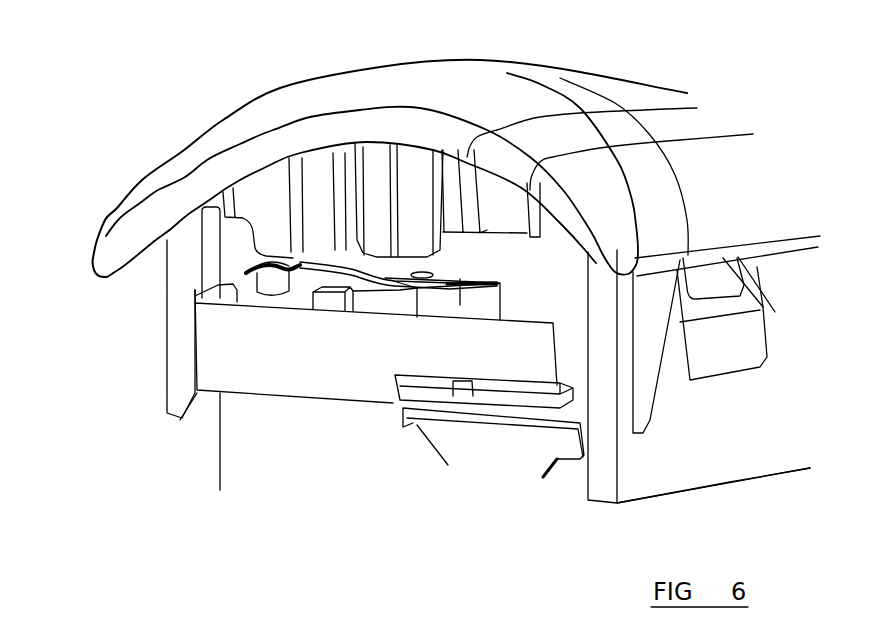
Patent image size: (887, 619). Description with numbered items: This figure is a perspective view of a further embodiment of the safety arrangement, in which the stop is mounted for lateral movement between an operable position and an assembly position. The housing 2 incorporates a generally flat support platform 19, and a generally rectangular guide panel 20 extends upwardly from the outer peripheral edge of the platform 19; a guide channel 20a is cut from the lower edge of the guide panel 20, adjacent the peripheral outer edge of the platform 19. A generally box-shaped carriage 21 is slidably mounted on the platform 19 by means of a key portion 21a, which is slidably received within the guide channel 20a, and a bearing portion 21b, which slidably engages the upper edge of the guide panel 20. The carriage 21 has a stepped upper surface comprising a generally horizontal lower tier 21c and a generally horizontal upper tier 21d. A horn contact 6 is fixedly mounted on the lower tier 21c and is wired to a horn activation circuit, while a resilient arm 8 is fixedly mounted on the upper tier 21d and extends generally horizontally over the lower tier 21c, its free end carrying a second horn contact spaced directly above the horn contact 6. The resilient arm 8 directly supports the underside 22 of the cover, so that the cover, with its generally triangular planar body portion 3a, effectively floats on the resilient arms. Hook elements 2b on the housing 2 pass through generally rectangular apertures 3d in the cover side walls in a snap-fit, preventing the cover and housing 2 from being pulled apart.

The housing 2 is at (233, 413).
The hook element 2b is at (743, 338).
The body portion 3a is at (720, 450).
The aperture 3d is at (757, 267).
The horn contact 6 is at (275, 285).
The resilient arm 8 is at (353, 267).
The support platform 19 is at (535, 403).
The guide panel 20 is at (390, 380).
The guide channel 20a is at (413, 423).
The carriage 21 is at (460, 307).
The key portion 21a is at (462, 392).
The bearing portion 21b is at (328, 299).
The lower tier 21c is at (303, 295).
The upper tier 21d is at (380, 302).
The underside 22 is at (295, 205).